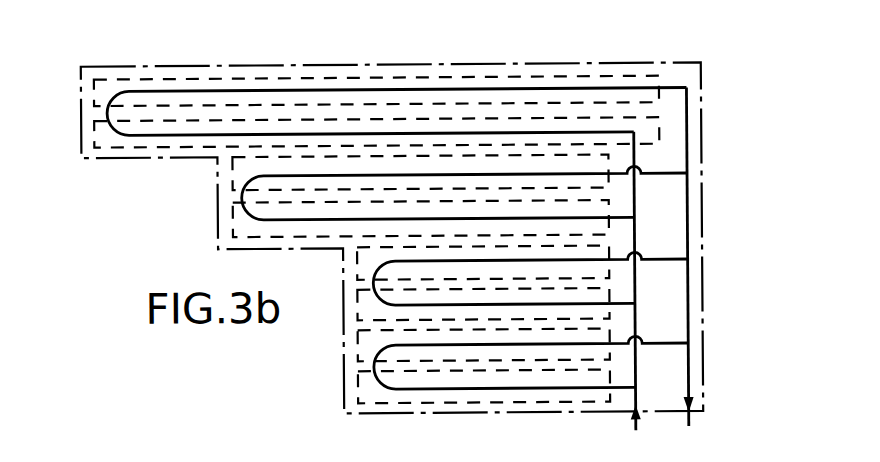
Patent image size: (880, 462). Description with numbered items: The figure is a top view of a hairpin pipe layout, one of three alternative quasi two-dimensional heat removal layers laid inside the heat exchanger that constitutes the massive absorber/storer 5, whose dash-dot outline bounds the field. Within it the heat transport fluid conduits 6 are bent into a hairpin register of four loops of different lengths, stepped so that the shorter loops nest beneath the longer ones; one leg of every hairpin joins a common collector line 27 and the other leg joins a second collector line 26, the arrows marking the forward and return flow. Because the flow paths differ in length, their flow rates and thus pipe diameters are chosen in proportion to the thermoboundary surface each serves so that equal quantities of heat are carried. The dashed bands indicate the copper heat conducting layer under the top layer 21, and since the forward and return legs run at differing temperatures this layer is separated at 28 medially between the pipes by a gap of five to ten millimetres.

The massive absorber/storer 5 is at (82, 99).
The heat transport fluid conduits 6 is at (573, 131).
The top layer 21 is at (466, 120).
The inlet bus line with arrow 26 is at (634, 431).
The outlet bus line with arrow 27 is at (688, 426).
The separation of heat conducting layer 28 is at (472, 321).